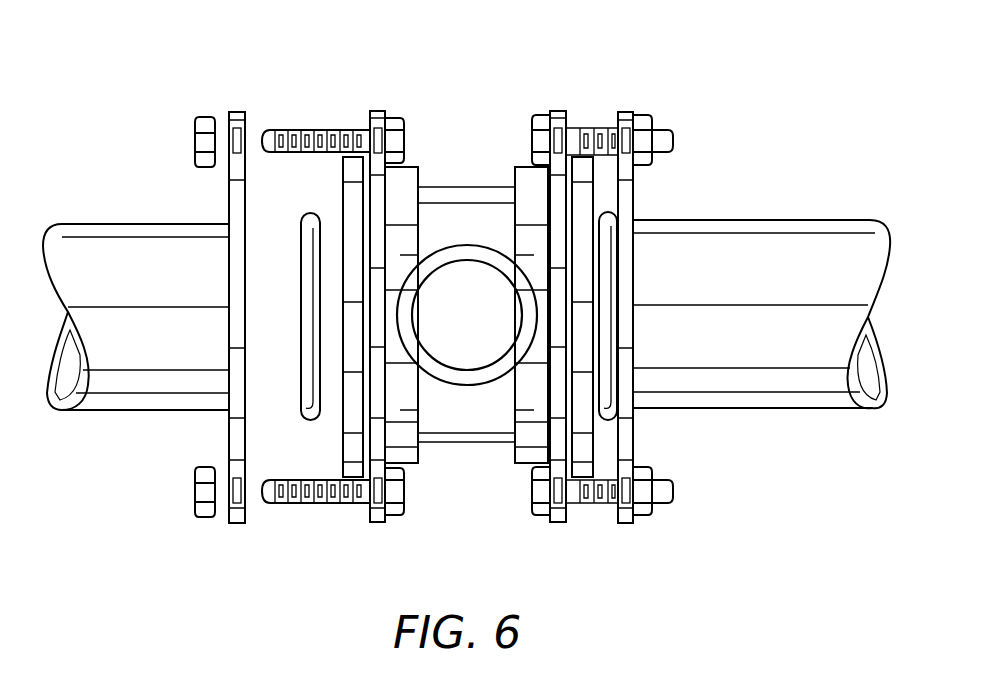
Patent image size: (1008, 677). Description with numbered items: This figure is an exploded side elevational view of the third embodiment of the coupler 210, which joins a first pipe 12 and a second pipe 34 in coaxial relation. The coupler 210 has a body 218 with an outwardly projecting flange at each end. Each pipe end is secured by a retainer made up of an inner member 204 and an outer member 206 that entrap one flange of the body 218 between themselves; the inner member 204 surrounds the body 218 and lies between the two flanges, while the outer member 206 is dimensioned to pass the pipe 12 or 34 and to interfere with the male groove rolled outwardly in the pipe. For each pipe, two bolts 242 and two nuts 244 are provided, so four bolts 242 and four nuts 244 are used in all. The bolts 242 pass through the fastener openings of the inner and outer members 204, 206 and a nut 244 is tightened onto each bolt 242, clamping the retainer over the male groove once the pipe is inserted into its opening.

The first pipe 12 is at (140, 222).
The second pipe 34 is at (752, 217).
The inner member 204 is at (589, 569).
The outer member 206 is at (231, 110).
The coupler 210 is at (519, 294).
The body 218 is at (462, 450).
The bolt 242 is at (349, 88).
The nut 244 is at (190, 140).